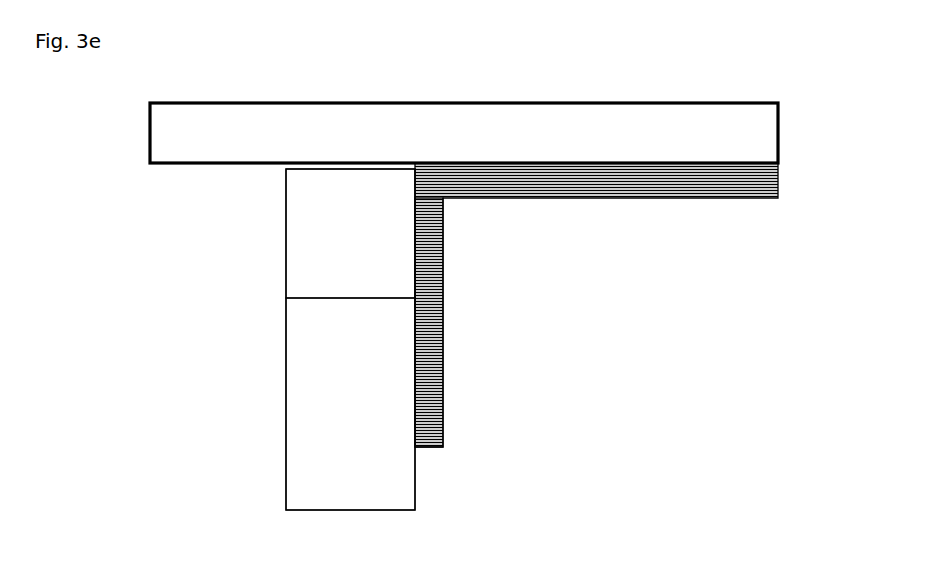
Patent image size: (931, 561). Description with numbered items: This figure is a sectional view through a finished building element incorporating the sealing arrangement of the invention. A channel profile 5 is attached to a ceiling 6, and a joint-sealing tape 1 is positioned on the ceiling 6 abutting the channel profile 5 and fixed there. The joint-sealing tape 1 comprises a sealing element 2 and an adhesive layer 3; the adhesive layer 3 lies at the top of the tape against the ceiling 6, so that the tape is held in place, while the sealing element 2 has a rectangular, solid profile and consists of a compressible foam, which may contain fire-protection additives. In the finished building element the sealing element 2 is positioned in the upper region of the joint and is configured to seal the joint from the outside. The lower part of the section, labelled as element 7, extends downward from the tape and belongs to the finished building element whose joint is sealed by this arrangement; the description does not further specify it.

The joint-sealing tape 1 is at (280, 244).
The sealing element 2 is at (365, 247).
The adhesive layer 3 is at (343, 167).
The channel profile 5 is at (566, 177).
The ceiling 6 is at (703, 137).
The lower body part of the mount 7 is at (378, 490).